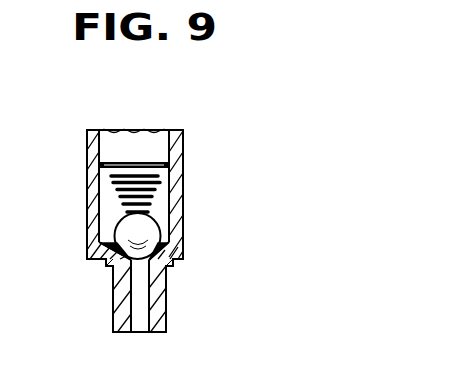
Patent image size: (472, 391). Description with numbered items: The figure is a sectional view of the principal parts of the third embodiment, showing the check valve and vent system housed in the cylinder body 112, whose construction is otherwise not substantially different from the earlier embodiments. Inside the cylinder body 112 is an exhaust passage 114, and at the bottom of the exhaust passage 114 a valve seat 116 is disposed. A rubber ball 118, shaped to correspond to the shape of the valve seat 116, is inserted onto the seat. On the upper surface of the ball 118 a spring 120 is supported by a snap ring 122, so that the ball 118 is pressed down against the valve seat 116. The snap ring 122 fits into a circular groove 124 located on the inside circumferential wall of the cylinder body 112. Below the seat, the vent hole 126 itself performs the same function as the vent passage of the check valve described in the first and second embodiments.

The cylinder body 112 is at (175, 200).
The exhaust passage 114 is at (117, 208).
The valve seat 116 is at (102, 243).
The rubber ball 118 is at (147, 238).
The spring 120 is at (100, 180).
The snap ring 122 is at (138, 161).
The circular groove 124 is at (160, 178).
The vent hole 126 is at (141, 305).